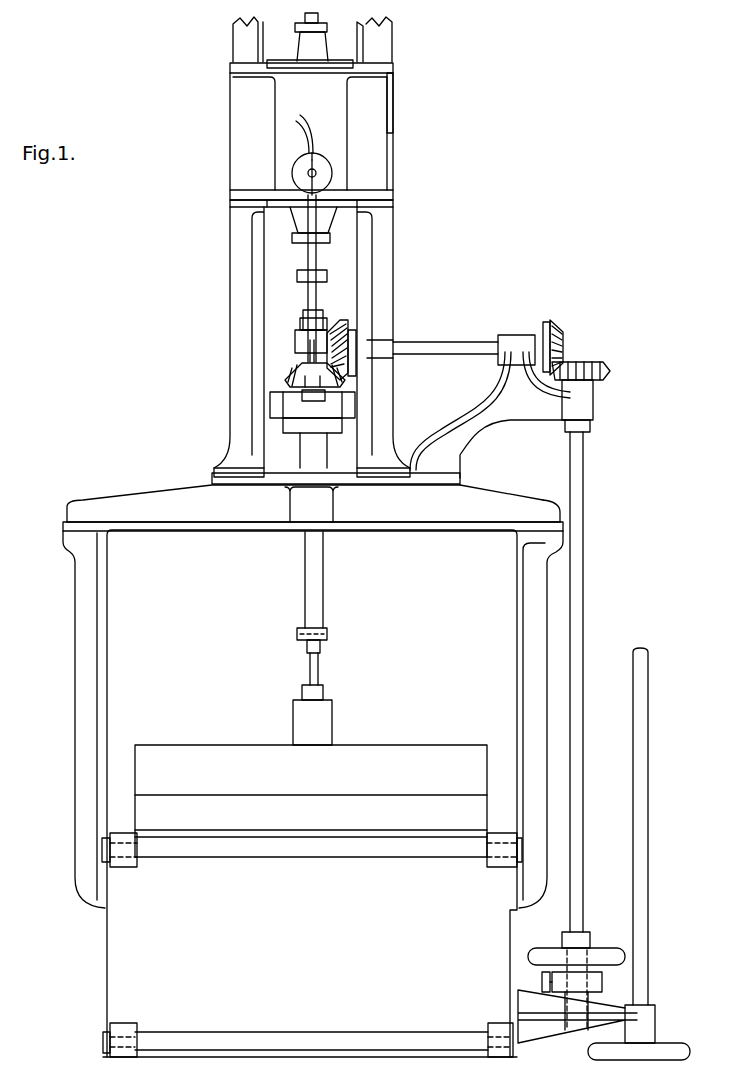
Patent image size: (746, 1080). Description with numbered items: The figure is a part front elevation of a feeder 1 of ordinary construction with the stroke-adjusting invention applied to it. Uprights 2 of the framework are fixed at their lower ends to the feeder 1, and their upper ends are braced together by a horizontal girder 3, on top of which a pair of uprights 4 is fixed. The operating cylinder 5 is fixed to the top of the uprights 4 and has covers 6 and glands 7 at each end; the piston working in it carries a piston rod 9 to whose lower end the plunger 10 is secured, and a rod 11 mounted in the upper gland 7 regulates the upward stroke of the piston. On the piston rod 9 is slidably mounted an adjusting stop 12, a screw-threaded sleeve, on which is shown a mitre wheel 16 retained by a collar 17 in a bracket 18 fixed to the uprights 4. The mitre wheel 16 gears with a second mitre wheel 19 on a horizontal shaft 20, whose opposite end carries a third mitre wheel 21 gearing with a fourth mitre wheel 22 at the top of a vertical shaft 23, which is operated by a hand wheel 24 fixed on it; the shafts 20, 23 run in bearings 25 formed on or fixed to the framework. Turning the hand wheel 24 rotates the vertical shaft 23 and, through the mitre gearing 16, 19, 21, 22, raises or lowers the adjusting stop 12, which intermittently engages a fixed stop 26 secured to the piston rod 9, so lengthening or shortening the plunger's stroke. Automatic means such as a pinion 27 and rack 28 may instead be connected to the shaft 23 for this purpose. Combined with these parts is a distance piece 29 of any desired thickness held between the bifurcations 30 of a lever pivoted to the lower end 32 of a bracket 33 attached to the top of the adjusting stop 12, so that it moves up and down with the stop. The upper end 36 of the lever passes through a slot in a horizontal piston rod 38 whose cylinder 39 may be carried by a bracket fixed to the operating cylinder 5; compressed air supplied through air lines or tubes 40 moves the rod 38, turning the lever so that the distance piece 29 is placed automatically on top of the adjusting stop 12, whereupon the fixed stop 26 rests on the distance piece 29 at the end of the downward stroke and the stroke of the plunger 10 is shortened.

The feeder 1 is at (310, 793).
The uprights of the framework 2 is at (75, 719).
The horizontal girder 3 is at (313, 502).
The uprights 4 is at (230, 220).
The operating cylinder 5 is at (311, 112).
The covers 6 is at (328, 40).
The glands 7 is at (295, 28).
The piston rod 9 is at (305, 577).
The plunger 10 is at (293, 727).
The rod 11 is at (315, 14).
The adjusting stop 12 is at (296, 364).
The mitre wheel 16 is at (340, 380).
The collar 17 is at (340, 428).
The bracket 18 is at (275, 410).
The second mitre wheel 19 is at (348, 326).
The horizontal shaft 20 is at (463, 342).
The third mitre wheel 21 is at (560, 330).
The fourth mitre wheel 22 is at (606, 372).
The vertical shaft 23 is at (583, 568).
The hand wheel 24 is at (622, 955).
The bearings 25 is at (393, 345).
The fixed stop 26 is at (297, 278).
The pinion 27 is at (602, 988).
The rack 28 is at (542, 976).
The distance piece 29 is at (300, 325).
The bifurcations 30 is at (314, 312).
The lower end of bracket 32 is at (305, 395).
The bracket 33 is at (295, 345).
The upper end of the lever 36 is at (314, 164).
The horizontal piston rod 38 is at (308, 173).
The cylinder 39 is at (332, 177).
The air lines or tubes 40 is at (296, 131).